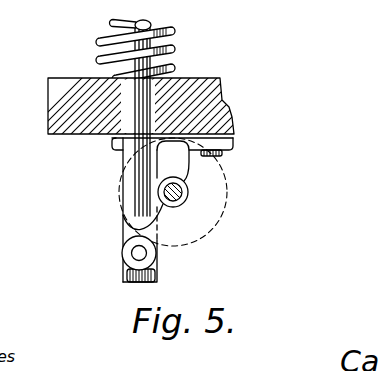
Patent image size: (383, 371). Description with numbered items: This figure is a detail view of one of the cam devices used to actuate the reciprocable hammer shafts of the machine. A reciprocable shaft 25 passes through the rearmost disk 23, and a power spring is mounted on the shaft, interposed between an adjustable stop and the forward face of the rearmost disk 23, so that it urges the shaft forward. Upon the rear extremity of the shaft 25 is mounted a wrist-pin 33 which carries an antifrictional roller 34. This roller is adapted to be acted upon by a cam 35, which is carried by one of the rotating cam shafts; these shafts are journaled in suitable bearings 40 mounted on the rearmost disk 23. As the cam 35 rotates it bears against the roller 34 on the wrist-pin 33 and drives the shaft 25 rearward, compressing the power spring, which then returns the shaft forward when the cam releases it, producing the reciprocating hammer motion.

The rearmost disk 23 is at (232, 112).
The shaft 25 is at (130, 146).
The wrist-pin 33 is at (131, 252).
The antifrictional roller 34 is at (122, 258).
The cam 35 is at (173, 222).
The bearing 40 is at (177, 163).